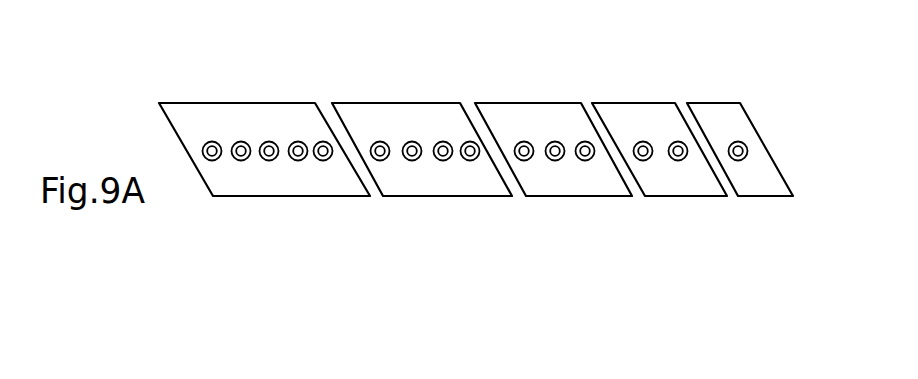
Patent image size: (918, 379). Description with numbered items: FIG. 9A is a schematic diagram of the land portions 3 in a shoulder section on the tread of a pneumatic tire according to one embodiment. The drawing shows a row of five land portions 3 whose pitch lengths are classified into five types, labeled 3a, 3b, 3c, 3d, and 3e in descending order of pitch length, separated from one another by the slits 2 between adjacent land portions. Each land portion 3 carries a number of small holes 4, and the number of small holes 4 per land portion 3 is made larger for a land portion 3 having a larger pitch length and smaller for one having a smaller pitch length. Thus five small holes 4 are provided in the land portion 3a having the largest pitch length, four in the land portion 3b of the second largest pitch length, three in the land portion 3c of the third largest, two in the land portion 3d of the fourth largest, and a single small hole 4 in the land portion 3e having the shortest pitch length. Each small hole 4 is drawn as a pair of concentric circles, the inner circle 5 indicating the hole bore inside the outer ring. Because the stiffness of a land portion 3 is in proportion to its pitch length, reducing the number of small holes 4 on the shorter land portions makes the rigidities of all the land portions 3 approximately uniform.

The slit between plate pieces 2 is at (464, 104).
The land portion 3 is at (476, 184).
The land portion having the largest pitch length 3a is at (285, 197).
The land portion having the second largest pitch length 3b is at (450, 197).
The land portion of the third largest pitch length 3c is at (553, 152).
The land portion of the fourth largest pitch length 3d is at (677, 197).
The land portion having the shortest pitch length 3e is at (740, 188).
The small hole 4 is at (521, 146).
The inner hole 5 is at (528, 146).